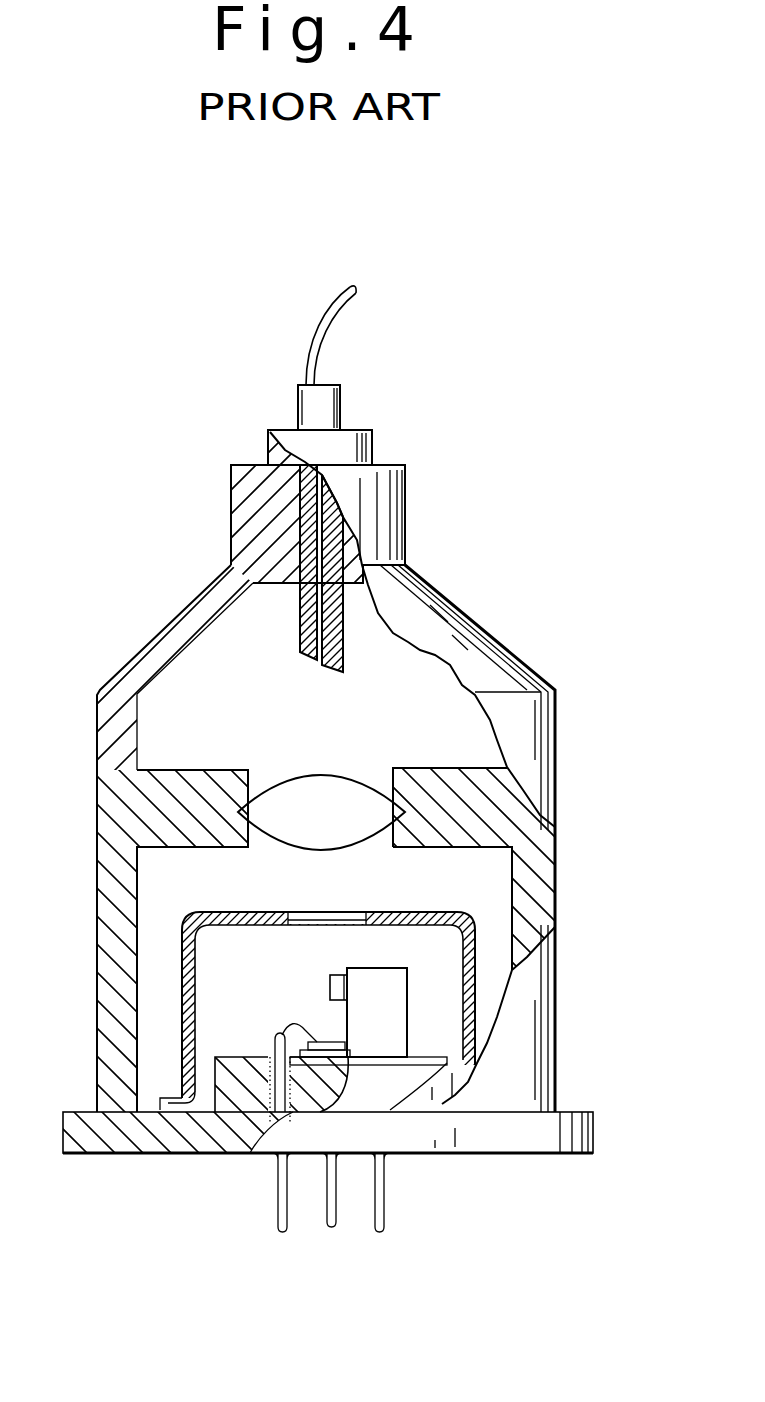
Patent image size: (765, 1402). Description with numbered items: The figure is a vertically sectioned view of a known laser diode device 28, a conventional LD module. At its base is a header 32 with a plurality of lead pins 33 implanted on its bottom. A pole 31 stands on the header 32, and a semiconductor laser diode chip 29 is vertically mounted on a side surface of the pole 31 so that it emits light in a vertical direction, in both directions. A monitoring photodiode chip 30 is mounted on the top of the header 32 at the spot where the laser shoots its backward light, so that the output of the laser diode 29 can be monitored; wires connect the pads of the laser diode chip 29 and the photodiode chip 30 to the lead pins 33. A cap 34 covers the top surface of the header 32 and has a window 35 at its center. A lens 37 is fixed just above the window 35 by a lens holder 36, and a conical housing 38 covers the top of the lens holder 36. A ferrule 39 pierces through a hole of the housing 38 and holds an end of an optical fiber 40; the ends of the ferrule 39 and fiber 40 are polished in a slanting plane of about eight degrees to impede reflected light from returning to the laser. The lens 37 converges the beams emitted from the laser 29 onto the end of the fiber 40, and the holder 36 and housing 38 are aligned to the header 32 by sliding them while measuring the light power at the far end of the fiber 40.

The laser diode device 28 is at (320, 794).
The semiconductor laser diode (LD) chip 29 is at (333, 990).
The monitoring photodiode (PD) chip 30 is at (316, 1038).
The pole 31 is at (395, 992).
The header 32 is at (167, 1137).
The lead pins 33 is at (378, 1228).
The cap 34 is at (323, 990).
The window 35 is at (328, 914).
The lens holder 36 is at (493, 792).
The lens 37 is at (300, 815).
The conical housing 38 is at (137, 668).
The ferrule 39 is at (305, 540).
The optical fiber 40 is at (327, 340).